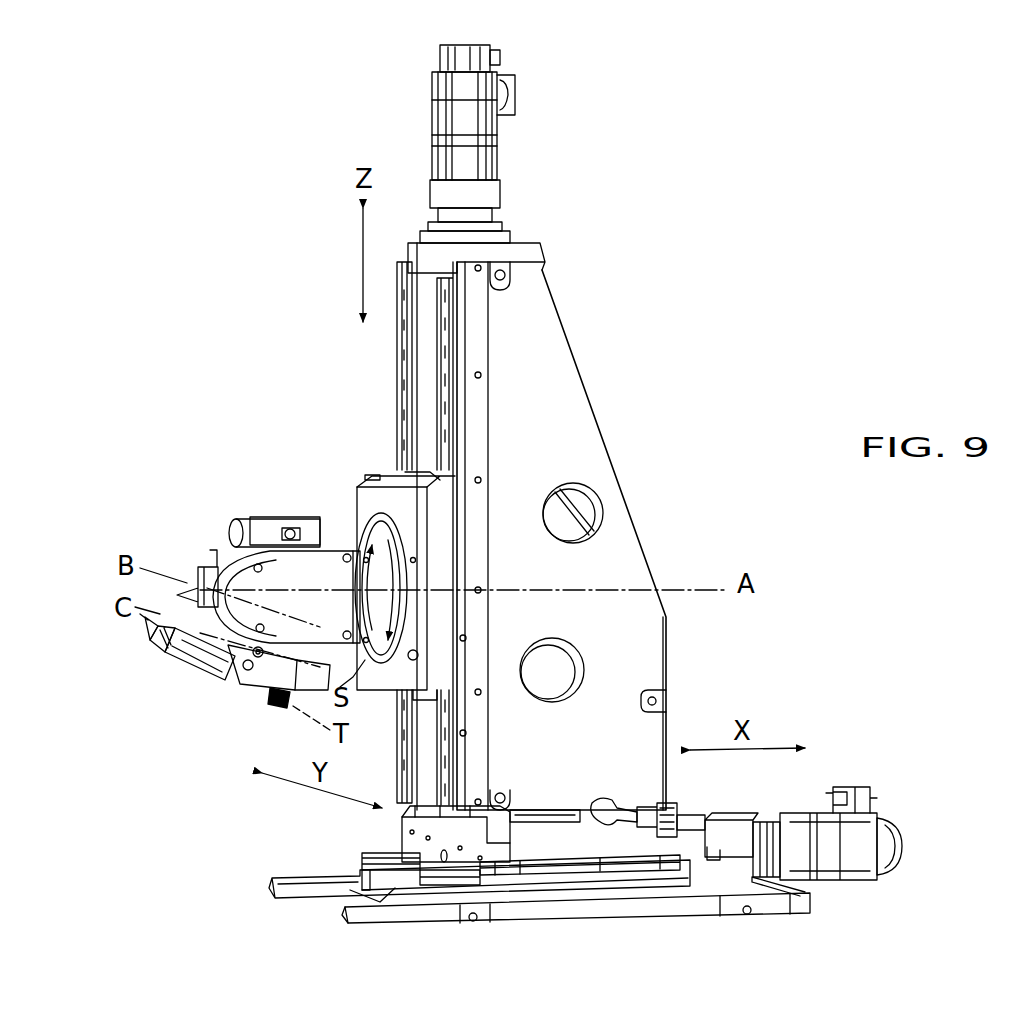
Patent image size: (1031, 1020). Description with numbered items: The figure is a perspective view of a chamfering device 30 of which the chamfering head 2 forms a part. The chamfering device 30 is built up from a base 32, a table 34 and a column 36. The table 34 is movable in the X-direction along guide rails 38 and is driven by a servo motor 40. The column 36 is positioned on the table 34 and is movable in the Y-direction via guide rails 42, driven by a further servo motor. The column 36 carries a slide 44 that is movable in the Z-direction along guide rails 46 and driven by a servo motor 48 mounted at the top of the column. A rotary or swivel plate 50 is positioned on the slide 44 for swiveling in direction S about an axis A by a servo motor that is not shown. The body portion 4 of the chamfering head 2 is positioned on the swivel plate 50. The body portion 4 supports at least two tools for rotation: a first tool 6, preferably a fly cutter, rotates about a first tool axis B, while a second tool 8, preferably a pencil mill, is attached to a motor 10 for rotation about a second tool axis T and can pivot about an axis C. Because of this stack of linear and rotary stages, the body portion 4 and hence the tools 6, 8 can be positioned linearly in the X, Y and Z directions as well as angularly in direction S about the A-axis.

The chamfering head 2 is at (212, 576).
The body portion 4 is at (286, 566).
The first tool 6 is at (208, 553).
The second tool 8 is at (150, 622).
The motor 10 is at (212, 655).
The chamfering device 30 is at (574, 522).
The base 32 is at (665, 905).
The table 34 is at (402, 826).
The column 36 is at (653, 640).
The guide rails 38 is at (360, 855).
The servo motor 40 is at (902, 841).
The guide rails 42 is at (683, 825).
The slide 44 is at (382, 480).
The guide rails 46 is at (398, 352).
The servo motor 48 is at (500, 137).
The swivel plate 50 is at (356, 527).